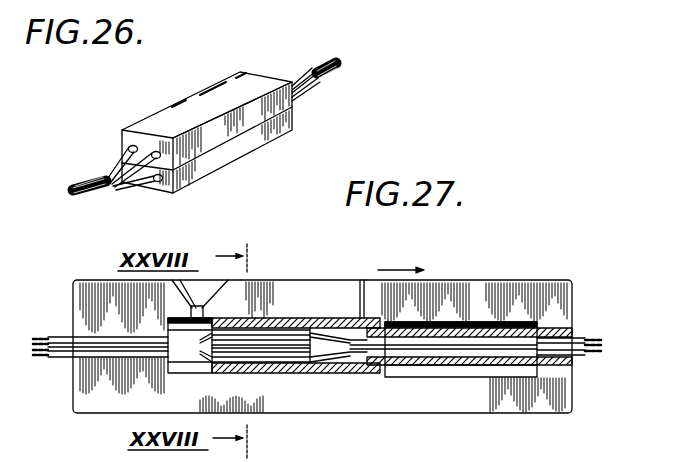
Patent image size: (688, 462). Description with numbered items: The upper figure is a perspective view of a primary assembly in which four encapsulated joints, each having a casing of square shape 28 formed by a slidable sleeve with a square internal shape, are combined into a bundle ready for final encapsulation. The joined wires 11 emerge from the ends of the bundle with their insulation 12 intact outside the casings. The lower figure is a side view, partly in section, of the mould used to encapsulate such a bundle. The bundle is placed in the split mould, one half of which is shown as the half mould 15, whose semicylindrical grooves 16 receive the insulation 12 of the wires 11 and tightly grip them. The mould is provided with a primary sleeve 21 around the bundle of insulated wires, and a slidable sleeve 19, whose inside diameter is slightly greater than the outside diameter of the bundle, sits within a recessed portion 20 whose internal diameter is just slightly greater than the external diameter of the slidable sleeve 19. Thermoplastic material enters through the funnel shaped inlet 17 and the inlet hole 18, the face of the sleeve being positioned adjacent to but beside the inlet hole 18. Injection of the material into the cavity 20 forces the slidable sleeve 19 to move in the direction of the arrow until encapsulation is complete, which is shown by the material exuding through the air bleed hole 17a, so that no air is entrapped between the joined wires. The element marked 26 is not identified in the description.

In FIG. 26, the wire 11 is at (99, 197).
In FIG. 27, the wire 11 is at (47, 358).
In FIG. 26, the insulation 12 is at (133, 186).
In FIG. 27, the insulation 12 is at (66, 353).
In FIG. 27, the half mould 15 is at (88, 401).
In FIG. 27, the semicylindrical grooves 16 is at (100, 330).
In FIG. 27, the funnel shaped inlet 17 is at (207, 293).
In FIG. 27, the air bleed hole 17a is at (362, 296).
In FIG. 27, the inlet hole 18 is at (185, 310).
In FIG. 27, the slidable sleeve 19 is at (283, 322).
In FIG. 27, the recessed portion 20 is at (180, 366).
In FIG. 27, the primary sleeve 21 is at (485, 331).
In FIG. 27, the inner contact 26 is at (290, 350).
In FIG. 26, the square shape casing 28 is at (157, 136).